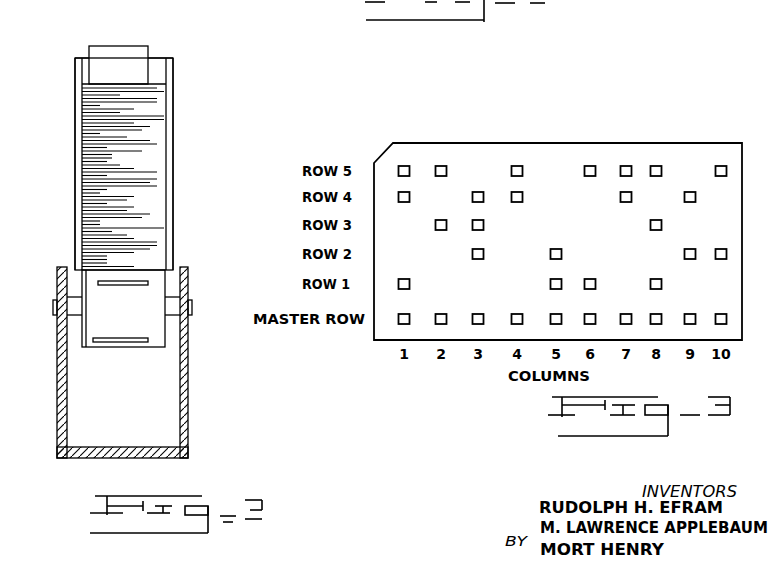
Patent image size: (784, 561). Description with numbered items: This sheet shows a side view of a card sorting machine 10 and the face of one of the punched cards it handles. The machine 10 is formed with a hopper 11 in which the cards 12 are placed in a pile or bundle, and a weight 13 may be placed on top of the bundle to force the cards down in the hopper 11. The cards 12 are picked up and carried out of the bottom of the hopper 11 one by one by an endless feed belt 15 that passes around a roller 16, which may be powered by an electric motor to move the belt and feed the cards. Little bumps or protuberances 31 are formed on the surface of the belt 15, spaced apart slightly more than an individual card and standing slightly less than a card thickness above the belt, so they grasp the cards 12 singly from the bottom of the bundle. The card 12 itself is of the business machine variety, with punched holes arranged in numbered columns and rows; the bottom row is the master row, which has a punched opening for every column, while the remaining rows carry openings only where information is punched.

In FIG. 2, the card sorting machine 10 is at (183, 218).
In FIG. 2, the hopper 11 is at (172, 162).
In FIG. 2, the cards 12 is at (152, 106).
In FIG. 3, the cards 12 is at (375, 347).
In FIG. 2, the weight 13 is at (138, 58).
In FIG. 2, the endless feed belt 15 is at (152, 295).
In FIG. 2, the roller 16 is at (163, 295).
In FIG. 2, the protuberances 31 is at (93, 283).